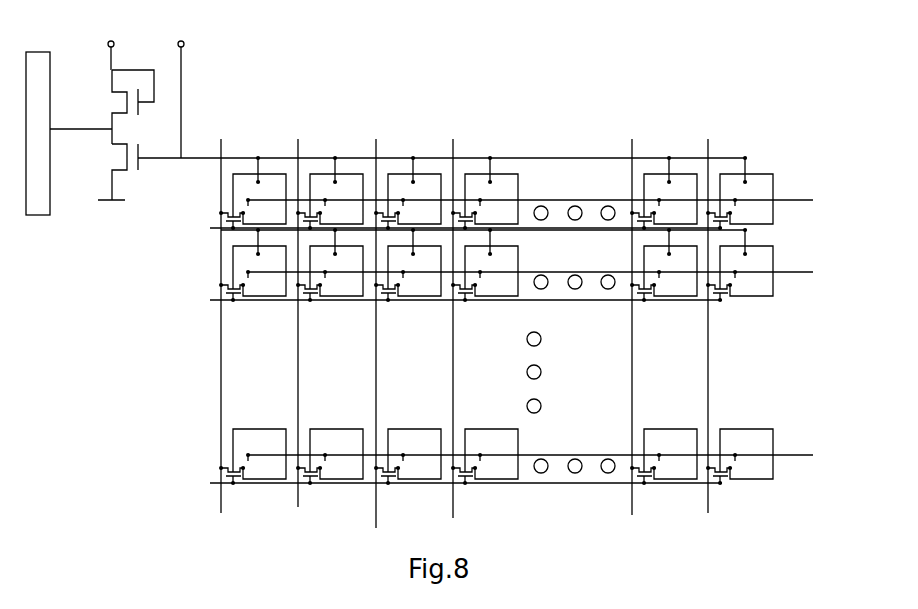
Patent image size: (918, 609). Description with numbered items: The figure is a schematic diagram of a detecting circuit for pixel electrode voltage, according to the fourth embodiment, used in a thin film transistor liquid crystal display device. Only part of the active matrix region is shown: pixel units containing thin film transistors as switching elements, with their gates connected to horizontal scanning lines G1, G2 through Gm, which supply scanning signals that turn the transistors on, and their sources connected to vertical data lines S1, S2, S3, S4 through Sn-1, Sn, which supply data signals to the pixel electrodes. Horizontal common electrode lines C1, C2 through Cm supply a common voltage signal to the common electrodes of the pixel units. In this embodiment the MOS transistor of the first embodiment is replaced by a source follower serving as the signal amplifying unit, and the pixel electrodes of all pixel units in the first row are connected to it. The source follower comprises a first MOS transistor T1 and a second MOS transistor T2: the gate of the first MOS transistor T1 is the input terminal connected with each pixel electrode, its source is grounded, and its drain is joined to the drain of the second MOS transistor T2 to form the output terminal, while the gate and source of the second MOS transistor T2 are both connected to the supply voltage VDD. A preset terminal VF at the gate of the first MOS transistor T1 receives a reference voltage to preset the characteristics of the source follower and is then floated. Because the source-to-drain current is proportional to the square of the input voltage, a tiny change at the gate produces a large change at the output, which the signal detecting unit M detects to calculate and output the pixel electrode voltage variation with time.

The signal detecting unit M is at (48, 52).
The supply voltage VDD is at (113, 46).
The preset terminal VF is at (182, 90).
The first MOS transistor T1 is at (416, 172).
The second MOS transistor T2 is at (120, 107).
The data line S1 is at (220, 316).
The data line S2 is at (297, 313).
The data line S3 is at (375, 324).
The data line S4 is at (452, 319).
The data line Sn-1 is at (632, 317).
The data line Sn is at (707, 316).
The scanning line G1 is at (455, 228).
The scanning line G2 is at (455, 301).
The scanning line Gm is at (454, 482).
The common electrode line C1 is at (542, 201).
The common electrode line C2 is at (542, 273).
The common electrode line Cm is at (544, 456).